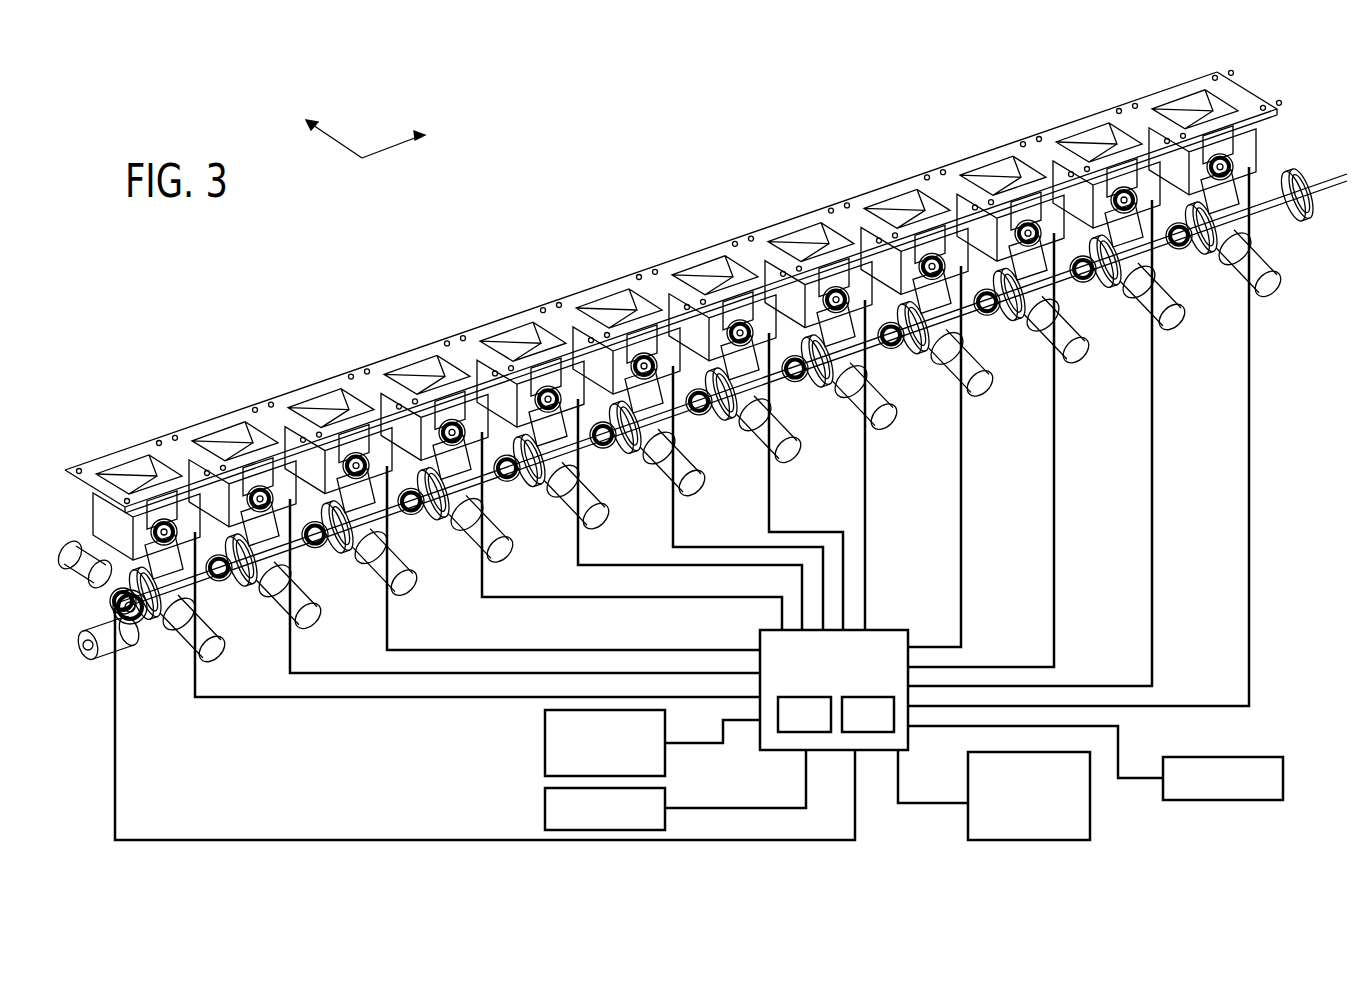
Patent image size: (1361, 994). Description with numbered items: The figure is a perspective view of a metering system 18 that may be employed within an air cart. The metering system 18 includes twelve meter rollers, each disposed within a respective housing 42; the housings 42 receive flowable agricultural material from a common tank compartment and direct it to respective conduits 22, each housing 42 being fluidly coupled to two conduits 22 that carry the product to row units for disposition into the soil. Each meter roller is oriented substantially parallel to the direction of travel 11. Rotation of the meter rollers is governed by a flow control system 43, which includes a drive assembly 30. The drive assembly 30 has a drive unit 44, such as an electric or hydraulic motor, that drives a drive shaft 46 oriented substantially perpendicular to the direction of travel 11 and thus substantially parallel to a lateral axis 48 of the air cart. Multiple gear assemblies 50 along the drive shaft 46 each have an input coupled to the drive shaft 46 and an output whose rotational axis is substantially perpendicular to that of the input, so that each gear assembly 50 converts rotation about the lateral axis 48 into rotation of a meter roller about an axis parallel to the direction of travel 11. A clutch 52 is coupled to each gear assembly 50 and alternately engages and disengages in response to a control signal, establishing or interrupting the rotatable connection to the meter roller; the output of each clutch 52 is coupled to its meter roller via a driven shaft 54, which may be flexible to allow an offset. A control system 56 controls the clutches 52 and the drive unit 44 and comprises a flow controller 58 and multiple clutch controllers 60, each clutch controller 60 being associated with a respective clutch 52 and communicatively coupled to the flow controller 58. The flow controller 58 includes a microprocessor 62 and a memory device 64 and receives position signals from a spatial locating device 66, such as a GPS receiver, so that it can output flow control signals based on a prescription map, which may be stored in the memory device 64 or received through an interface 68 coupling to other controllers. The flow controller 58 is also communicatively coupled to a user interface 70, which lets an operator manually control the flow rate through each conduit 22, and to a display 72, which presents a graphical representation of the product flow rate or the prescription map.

The direction of travel 11 is at (337, 145).
The metering system 18 is at (637, 150).
The conduit 22 is at (670, 461).
The drive assembly 30 is at (168, 710).
The housing 42 is at (673, 300).
The flow control system 43 is at (1262, 358).
The drive unit 44 is at (92, 660).
The drive shaft 46 is at (134, 624).
The lateral axis 48 is at (383, 148).
The gear assembly 50 is at (729, 398).
The clutch 52 is at (671, 326).
The driven shaft 54 is at (693, 284).
The control system 56 is at (1273, 612).
The flow controller 58 is at (775, 750).
The clutch controller 60 is at (734, 292).
The microprocessor 62 is at (812, 733).
The memory device 64 is at (870, 733).
The spatial locating device 66 is at (1090, 820).
The interface 68 is at (1283, 780).
The user interface 70 is at (545, 742).
The display 72 is at (545, 810).